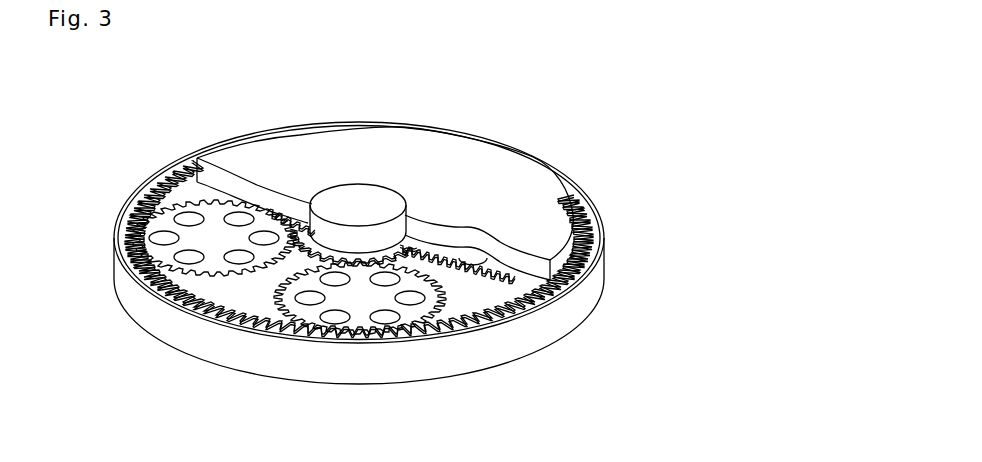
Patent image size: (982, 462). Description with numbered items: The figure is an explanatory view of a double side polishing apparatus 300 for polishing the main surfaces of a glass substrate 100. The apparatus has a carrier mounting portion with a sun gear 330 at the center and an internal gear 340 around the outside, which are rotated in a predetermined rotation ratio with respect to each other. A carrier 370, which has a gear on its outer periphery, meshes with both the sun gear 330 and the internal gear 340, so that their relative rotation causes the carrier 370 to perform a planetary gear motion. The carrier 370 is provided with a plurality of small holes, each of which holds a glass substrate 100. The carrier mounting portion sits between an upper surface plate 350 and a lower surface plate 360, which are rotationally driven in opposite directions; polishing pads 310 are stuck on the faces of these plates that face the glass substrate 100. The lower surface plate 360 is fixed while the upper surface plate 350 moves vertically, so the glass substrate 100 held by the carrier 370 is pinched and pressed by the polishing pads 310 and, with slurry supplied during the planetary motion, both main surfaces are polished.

The double side polishing apparatus 300 is at (407, 107).
The glass substrate 100 is at (240, 217).
The polishing pads 310 is at (530, 278).
The sun gear 330 is at (302, 213).
The internal gear 340 is at (165, 183).
The upper surface plate 350 is at (518, 178).
The lower surface plate 360 is at (443, 360).
The carrier 370 is at (288, 318).